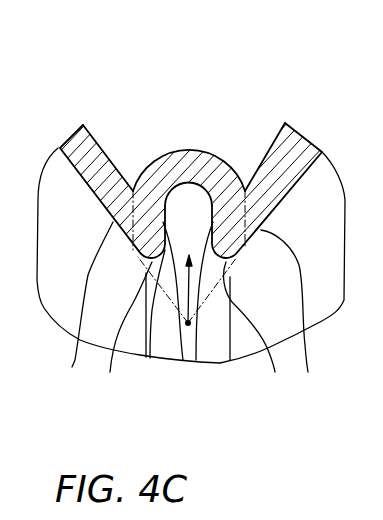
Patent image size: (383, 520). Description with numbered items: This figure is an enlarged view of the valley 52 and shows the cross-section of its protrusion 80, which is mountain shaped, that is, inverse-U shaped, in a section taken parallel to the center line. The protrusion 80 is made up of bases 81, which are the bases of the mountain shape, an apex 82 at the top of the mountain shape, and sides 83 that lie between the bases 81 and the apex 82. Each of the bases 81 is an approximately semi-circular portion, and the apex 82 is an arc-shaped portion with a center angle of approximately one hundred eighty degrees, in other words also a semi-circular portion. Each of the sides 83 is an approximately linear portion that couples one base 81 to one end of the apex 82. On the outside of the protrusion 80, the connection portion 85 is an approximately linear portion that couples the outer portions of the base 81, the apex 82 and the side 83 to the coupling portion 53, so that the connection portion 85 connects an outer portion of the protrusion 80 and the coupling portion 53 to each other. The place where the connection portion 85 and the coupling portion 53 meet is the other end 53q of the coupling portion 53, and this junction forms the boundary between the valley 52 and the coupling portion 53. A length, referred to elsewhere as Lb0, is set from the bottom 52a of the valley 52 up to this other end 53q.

The valley 52 is at (323, 102).
The bottom 52a is at (184, 362).
The coupling portion 53 is at (100, 131).
The other end of the coupling portion 53q is at (100, 148).
The protrusion 80 is at (189, 325).
The bases 81 is at (110, 372).
The apex 82 is at (192, 148).
The sides 83 is at (146, 358).
The connection portion 85 is at (72, 367).